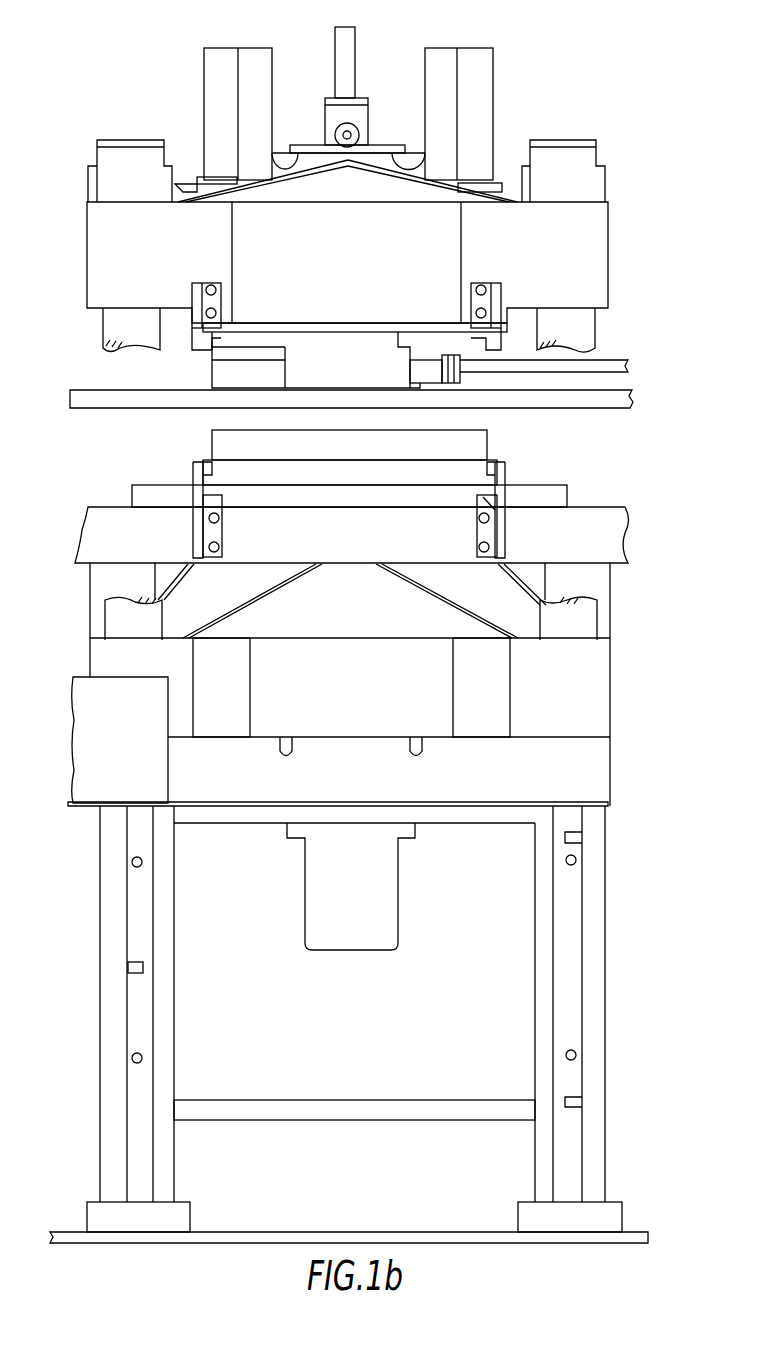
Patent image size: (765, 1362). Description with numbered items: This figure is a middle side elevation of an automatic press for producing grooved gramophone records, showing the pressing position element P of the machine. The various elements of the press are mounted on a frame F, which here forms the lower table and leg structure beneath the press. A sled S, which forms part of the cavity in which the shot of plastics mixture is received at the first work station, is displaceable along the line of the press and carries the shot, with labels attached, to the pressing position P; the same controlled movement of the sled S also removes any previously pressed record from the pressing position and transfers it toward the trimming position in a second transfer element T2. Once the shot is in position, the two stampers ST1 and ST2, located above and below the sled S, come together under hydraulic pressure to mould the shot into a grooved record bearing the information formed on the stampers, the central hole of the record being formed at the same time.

The pressing position element P is at (197, 98).
The sled S is at (102, 413).
The stamper ST1 is at (253, 380).
The stamper ST2 is at (495, 443).
The second transfer element T2 is at (350, 400).
The frame F is at (77, 545).